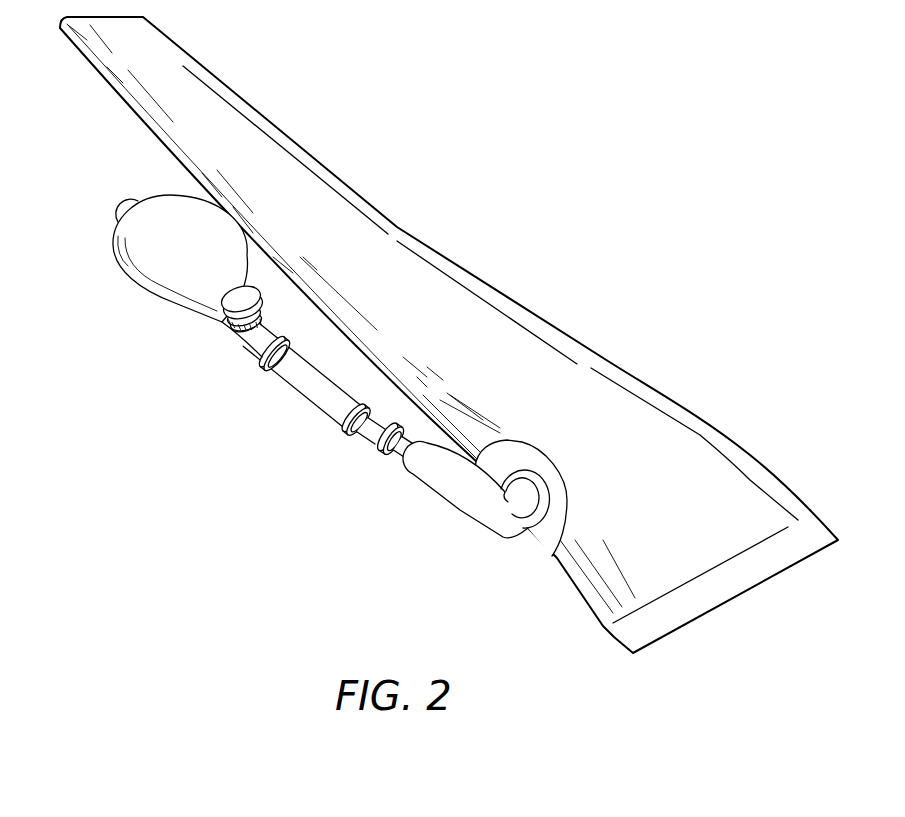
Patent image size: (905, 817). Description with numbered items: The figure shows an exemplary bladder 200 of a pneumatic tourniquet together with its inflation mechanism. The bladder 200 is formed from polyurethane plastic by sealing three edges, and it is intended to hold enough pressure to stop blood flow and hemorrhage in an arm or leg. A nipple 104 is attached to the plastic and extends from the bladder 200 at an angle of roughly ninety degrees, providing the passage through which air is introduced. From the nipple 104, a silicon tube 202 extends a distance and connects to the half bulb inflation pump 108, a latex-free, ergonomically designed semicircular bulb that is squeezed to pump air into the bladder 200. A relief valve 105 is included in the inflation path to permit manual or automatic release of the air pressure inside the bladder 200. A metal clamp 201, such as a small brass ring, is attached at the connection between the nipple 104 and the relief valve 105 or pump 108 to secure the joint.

The bladder 200 is at (430, 275).
The half bulb inflation pump 108 is at (126, 278).
The relief valve 105 is at (223, 317).
The silicon tube 202 is at (307, 397).
The metal clamp 201 is at (378, 455).
The nipple 104 is at (472, 507).